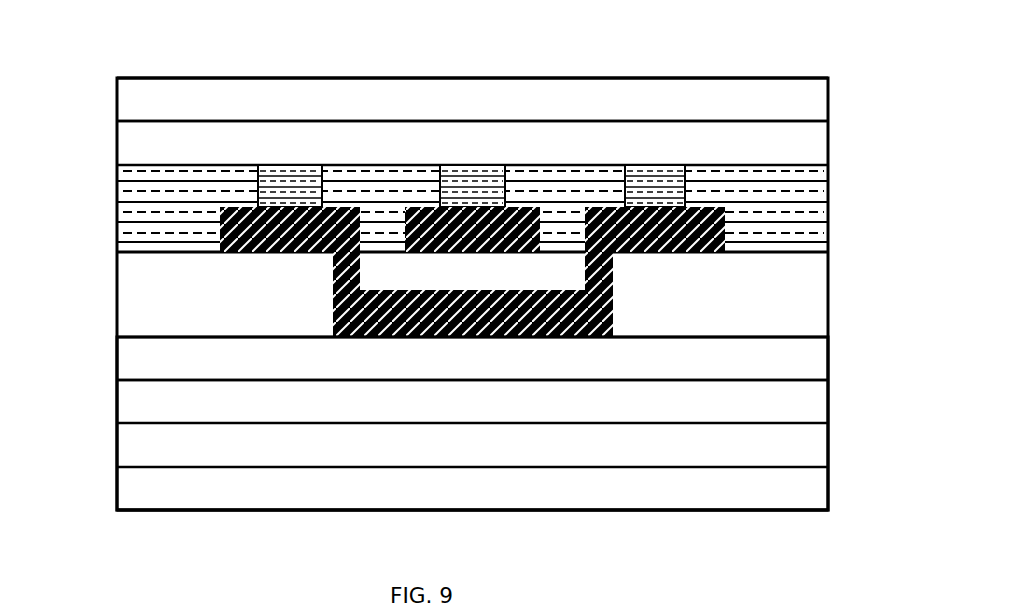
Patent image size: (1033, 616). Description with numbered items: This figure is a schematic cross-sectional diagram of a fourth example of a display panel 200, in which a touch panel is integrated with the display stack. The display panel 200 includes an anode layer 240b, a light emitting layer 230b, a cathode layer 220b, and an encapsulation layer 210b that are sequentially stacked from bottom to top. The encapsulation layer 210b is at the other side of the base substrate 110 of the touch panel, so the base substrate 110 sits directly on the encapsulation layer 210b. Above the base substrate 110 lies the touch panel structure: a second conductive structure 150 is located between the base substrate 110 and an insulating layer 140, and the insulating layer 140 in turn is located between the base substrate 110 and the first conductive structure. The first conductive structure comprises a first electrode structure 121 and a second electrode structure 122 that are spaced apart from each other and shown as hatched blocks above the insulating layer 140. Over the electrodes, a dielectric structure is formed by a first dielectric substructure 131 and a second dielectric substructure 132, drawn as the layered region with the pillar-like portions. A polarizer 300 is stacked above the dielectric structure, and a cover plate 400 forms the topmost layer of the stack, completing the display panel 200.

The cover plate 400 is at (153, 95).
The polarizer 300 is at (153, 148).
The second dielectric substructure 132 is at (785, 198).
The first dielectric substructure 131 is at (655, 165).
The second electrode structure 122 is at (440, 253).
The first electrode structure 121 is at (700, 254).
The second conductive structure 150 is at (610, 305).
The insulating layer 140 is at (800, 328).
The encapsulation layer 210b is at (800, 362).
The base substrate 110 is at (526, 368).
The cathode layer 220b is at (800, 403).
The light-emitting layer 230b is at (800, 450).
The anode layer 240b is at (800, 490).
The display panel 200 is at (108, 335).